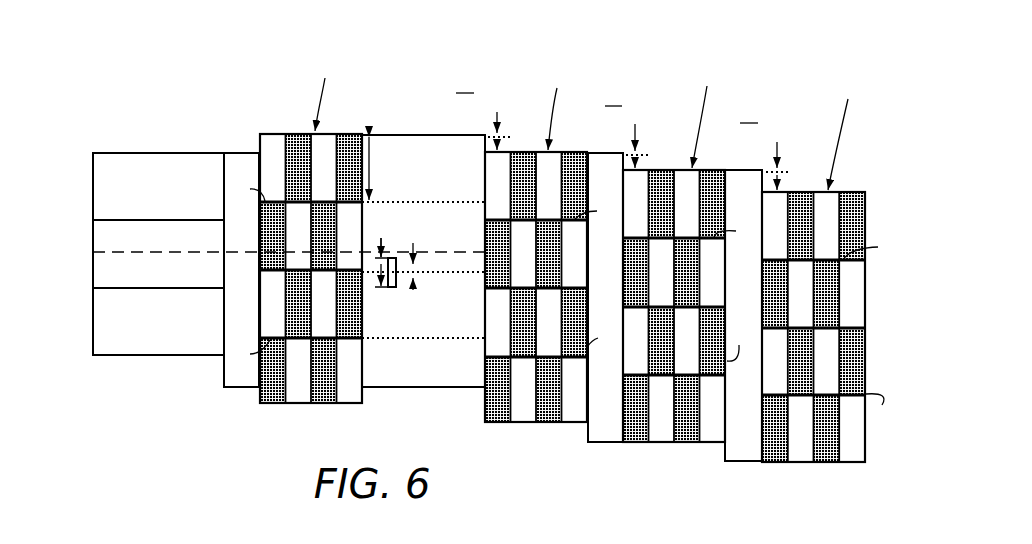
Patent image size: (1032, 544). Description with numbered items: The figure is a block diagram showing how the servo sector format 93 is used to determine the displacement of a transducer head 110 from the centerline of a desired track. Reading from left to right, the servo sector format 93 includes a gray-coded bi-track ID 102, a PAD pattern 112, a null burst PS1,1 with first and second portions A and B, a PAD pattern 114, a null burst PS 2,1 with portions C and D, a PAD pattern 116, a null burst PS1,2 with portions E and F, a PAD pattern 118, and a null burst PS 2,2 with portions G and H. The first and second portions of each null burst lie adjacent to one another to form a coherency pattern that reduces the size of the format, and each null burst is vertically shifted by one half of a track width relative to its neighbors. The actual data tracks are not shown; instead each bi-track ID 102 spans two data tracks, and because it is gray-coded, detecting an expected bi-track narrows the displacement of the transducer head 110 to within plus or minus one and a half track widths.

The servo sector format 93 is at (87, 118).
The bi-track ID 102 is at (180, 151).
The transducer head 110 is at (394, 287).
The PAD pattern 112 is at (226, 389).
The PAD pattern 114 is at (438, 388).
The PAD pattern 116 is at (595, 443).
The PAD pattern 118 is at (740, 462).